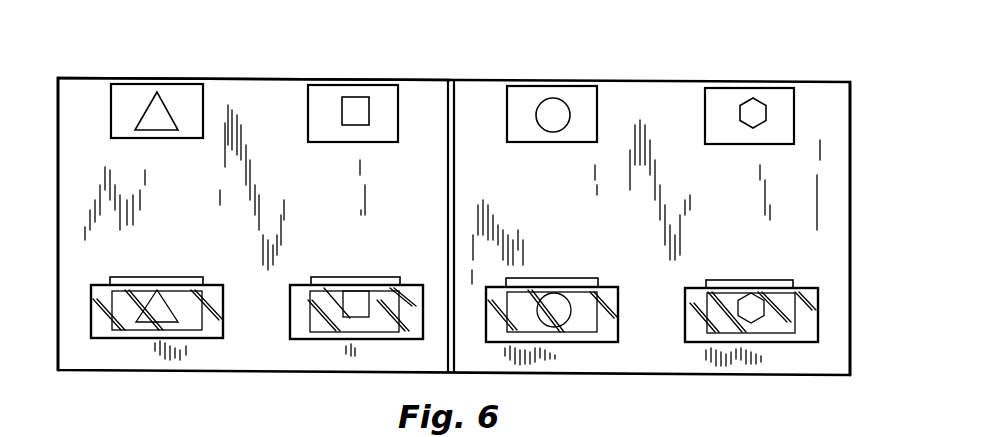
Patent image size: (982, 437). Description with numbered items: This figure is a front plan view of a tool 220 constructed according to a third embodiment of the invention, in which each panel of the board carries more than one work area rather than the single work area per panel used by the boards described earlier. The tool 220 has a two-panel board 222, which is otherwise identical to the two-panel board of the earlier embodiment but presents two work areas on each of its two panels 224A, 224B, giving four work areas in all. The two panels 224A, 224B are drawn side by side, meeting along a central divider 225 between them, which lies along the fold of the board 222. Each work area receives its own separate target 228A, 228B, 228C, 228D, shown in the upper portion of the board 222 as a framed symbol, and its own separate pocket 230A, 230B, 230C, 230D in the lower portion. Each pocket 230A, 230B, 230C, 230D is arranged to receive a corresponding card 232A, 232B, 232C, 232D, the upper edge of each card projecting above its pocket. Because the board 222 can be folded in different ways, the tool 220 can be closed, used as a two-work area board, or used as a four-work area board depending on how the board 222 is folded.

The tool 220 is at (281, 72).
The two-panel board 222 is at (76, 74).
The panel 224A is at (54, 92).
The panel 224B is at (874, 76).
The divider 225 is at (456, 192).
The target 228A is at (196, 84).
The target 228B is at (392, 86).
The target 228C is at (580, 87).
The target 228D is at (757, 89).
The pocket 230A is at (108, 340).
The pocket 230B is at (345, 340).
The pocket 230C is at (606, 343).
The pocket 230D is at (797, 343).
The card 232A is at (202, 253).
The card 232B is at (375, 277).
The card 232C is at (565, 278).
The card 232D is at (762, 280).